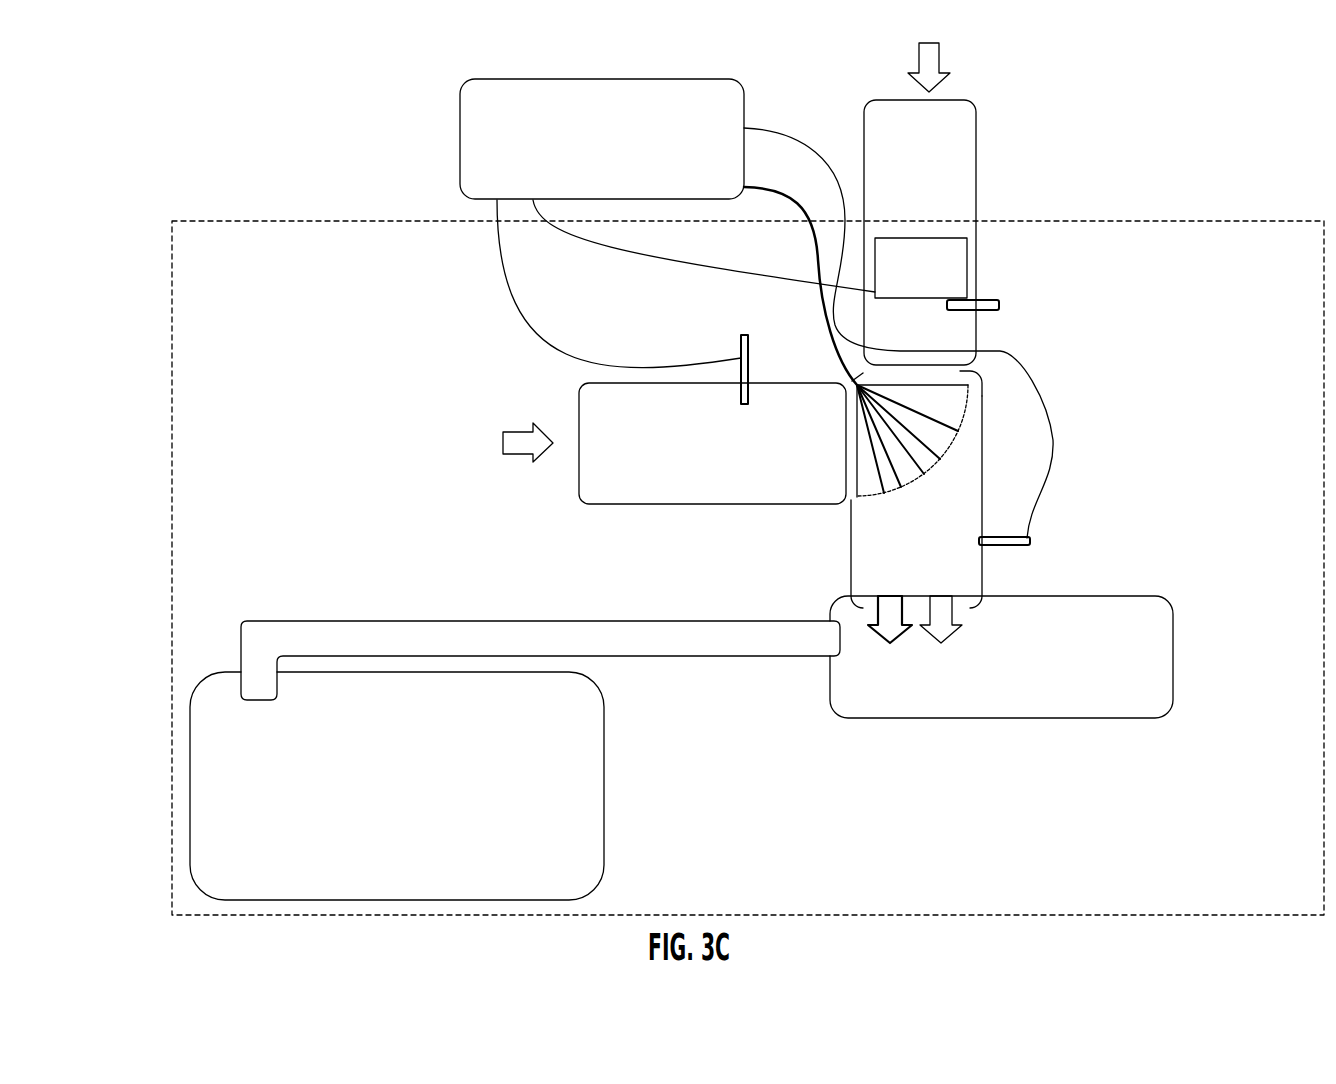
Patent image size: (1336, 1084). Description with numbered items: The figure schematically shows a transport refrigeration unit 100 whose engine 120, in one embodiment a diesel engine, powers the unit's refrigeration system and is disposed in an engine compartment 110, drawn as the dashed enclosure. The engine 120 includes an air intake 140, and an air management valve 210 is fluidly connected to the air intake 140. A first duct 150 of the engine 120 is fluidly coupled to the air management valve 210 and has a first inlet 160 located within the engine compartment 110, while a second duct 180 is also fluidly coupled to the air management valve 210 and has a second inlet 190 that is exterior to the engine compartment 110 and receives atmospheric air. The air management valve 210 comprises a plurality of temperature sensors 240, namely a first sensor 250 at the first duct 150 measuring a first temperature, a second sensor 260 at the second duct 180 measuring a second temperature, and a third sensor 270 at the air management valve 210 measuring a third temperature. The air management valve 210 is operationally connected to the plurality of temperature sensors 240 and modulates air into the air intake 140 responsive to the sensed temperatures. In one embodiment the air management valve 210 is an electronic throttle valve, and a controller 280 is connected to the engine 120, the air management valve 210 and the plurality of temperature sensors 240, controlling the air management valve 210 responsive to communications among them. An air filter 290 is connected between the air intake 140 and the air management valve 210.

The transport refrigeration unit 100 is at (142, 209).
The engine compartment 110 is at (416, 352).
The engine 120 is at (416, 801).
The air intake 140 is at (587, 653).
The first duct 150 is at (687, 463).
The first inlet 160 is at (577, 472).
The second duct 180 is at (904, 284).
The second inlet 190 is at (972, 167).
The air management valve 210 is at (919, 564).
The plurality of temperature sensors 240 is at (1012, 334).
The first sensor 250 is at (1000, 302).
The second sensor 260 is at (1032, 551).
The third sensor 270 is at (741, 345).
The controller 280 is at (643, 155).
The air filter 290 is at (986, 686).